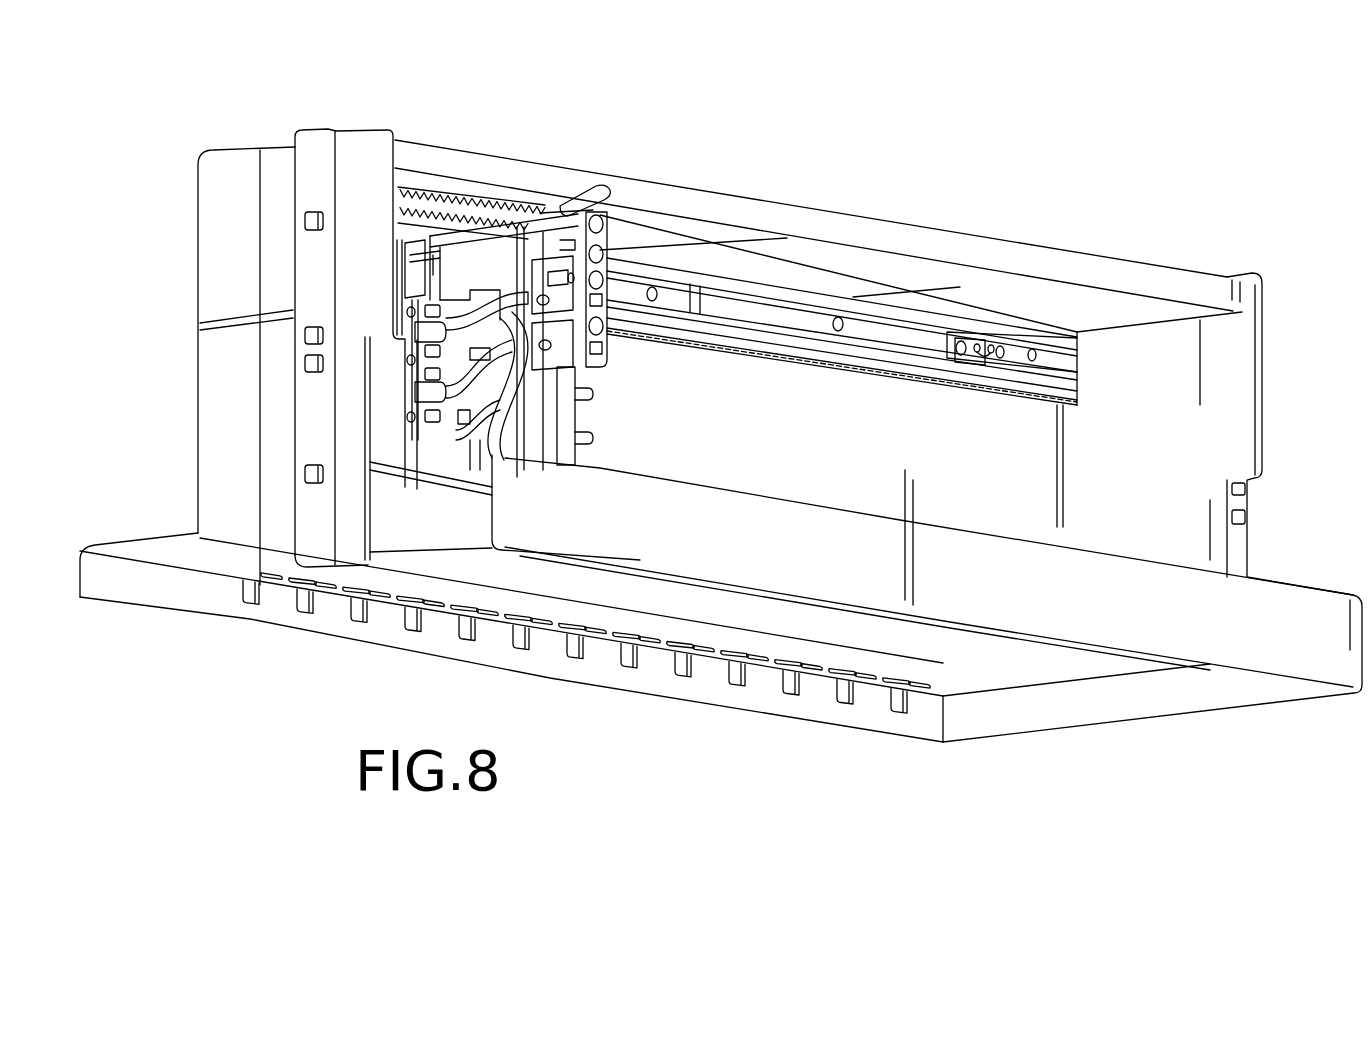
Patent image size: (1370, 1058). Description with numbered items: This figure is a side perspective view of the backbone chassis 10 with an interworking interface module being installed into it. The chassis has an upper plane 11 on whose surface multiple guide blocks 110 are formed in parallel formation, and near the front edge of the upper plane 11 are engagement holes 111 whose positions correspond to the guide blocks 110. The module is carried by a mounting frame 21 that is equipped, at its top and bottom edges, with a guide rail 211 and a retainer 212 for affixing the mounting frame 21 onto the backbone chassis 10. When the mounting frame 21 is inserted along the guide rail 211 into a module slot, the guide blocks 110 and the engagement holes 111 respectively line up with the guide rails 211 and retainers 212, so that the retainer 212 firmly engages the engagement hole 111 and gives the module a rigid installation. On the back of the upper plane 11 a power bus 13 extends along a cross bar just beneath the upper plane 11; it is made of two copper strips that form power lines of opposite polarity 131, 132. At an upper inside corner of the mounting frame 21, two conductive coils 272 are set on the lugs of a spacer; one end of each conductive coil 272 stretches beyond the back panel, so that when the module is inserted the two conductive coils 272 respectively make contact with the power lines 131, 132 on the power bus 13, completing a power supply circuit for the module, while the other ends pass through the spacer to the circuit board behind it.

The backbone chassis 10 is at (275, 150).
The upper plane 11 is at (788, 243).
The power bus 13 is at (935, 330).
The power line 131 is at (892, 347).
The power line 132 is at (905, 366).
The mounting frame 21 is at (612, 233).
The guide rail 211 is at (480, 213).
The retainer 212 is at (612, 193).
The guide block 110 is at (440, 190).
The engagement hole 111 is at (527, 197).
The conductive coil 272 is at (423, 255).